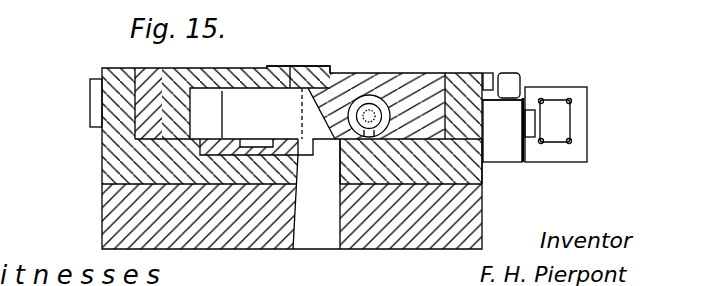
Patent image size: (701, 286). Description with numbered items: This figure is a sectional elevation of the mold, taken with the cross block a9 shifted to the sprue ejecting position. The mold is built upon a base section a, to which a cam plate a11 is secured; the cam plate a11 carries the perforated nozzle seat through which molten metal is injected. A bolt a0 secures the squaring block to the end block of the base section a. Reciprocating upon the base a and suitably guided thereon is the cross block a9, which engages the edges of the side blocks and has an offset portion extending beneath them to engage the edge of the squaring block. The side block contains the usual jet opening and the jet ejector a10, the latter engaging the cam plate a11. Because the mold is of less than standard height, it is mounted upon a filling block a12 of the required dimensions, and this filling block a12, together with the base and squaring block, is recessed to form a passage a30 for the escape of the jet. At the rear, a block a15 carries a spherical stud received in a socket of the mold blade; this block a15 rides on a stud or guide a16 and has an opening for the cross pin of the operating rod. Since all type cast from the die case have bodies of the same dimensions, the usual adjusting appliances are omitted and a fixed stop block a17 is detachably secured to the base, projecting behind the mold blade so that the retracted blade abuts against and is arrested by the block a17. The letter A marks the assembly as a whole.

The matrix block A is at (261, 157).
The base section a is at (115, 153).
The bolt a0 is at (373, 102).
The cross block a9 is at (236, 68).
The jet ejector a10 is at (262, 121).
The cam plate a11 is at (243, 140).
The filling block a12 is at (128, 220).
The block a15 is at (499, 117).
The stud or guide a16 is at (528, 122).
The block a17 is at (507, 87).
The passage a30 is at (387, 194).